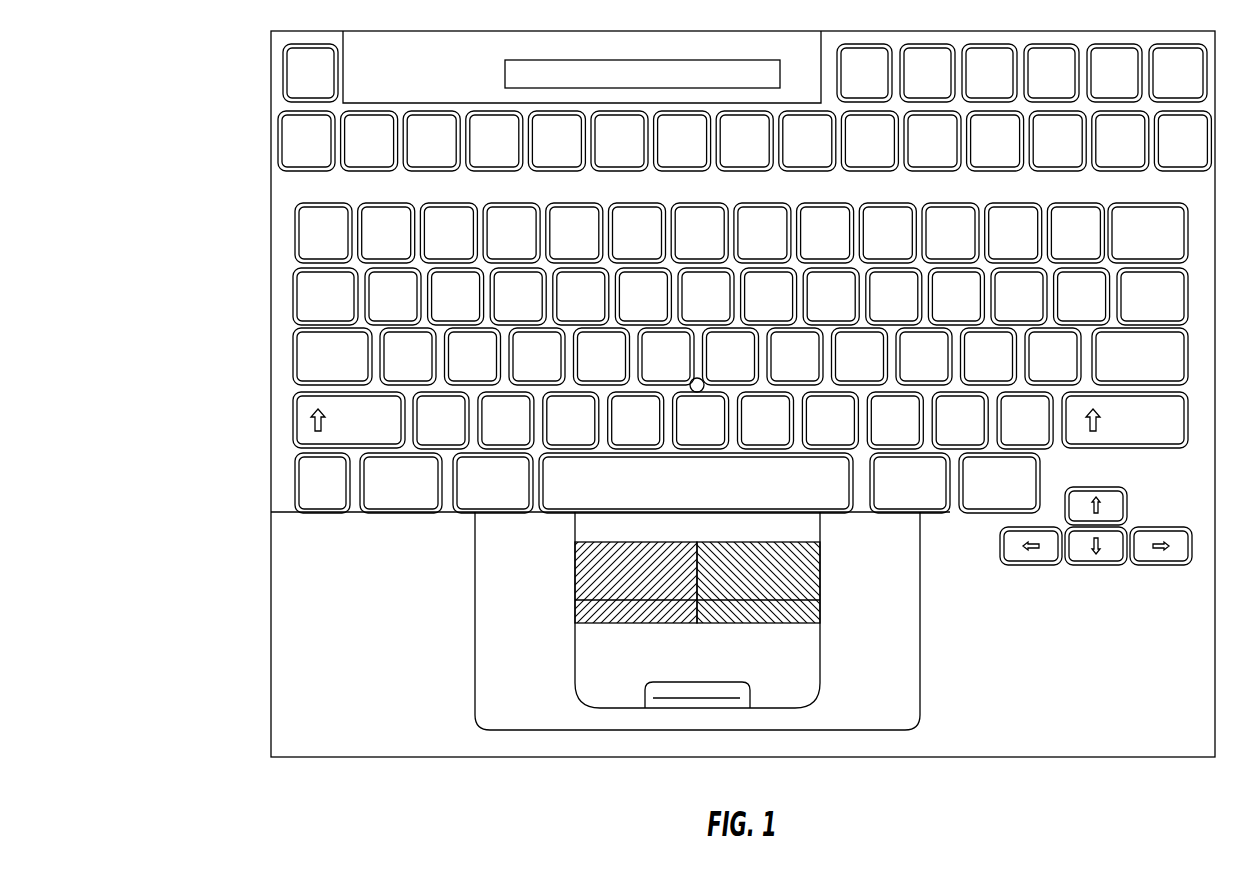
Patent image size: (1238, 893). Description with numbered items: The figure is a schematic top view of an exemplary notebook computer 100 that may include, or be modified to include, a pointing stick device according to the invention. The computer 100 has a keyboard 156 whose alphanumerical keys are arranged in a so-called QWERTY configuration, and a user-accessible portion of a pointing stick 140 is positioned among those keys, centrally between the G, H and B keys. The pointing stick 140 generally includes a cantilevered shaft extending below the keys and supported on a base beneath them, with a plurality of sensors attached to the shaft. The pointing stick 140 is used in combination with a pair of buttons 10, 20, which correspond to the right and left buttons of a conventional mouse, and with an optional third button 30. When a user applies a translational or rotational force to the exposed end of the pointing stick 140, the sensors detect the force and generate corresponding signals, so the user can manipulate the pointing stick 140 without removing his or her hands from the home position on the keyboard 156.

The notebook computer 100 is at (146, 102).
The keyboard 156 is at (268, 455).
The pointing stick 140 is at (698, 392).
The button 10 is at (592, 578).
The button 20 is at (808, 572).
The third button 30 is at (804, 657).